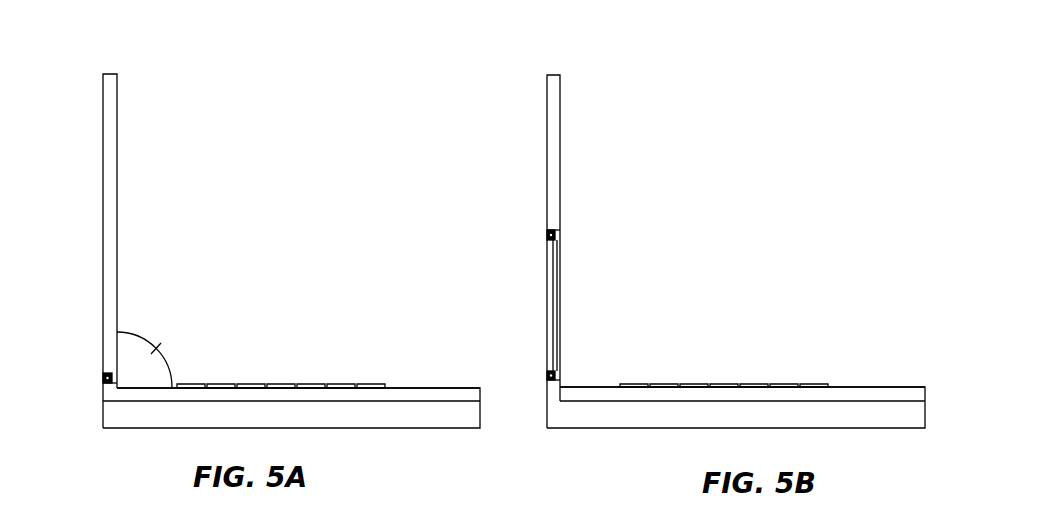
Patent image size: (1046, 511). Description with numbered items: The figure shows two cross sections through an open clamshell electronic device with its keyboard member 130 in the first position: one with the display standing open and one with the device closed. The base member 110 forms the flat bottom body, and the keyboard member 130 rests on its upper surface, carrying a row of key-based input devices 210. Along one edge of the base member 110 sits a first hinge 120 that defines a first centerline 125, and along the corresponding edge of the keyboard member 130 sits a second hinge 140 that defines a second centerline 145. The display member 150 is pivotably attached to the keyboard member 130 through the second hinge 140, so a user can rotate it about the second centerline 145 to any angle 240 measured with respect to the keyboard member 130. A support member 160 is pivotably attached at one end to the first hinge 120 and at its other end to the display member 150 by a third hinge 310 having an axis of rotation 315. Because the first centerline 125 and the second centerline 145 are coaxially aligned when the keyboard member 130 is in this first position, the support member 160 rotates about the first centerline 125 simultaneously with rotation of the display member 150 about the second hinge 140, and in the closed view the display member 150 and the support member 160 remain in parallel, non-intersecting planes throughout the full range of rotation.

In FIG. 5A, the base member 110 is at (356, 428).
In FIG. 5B, the base member 110 is at (790, 408).
In FIG. 5B, the first hinge 120 is at (547, 386).
In FIG. 5B, the first centerline 125 is at (555, 372).
In FIG. 5A, the keyboard member 130 is at (433, 387).
In FIG. 5B, the keyboard member 130 is at (872, 398).
In FIG. 5A, the second hinge 140 is at (103, 390).
In FIG. 5A, the second centerline 145 is at (108, 380).
In FIG. 5B, the display member 150 is at (560, 153).
In FIG. 5B, the support member 160 is at (547, 272).
In FIG. 5A, the key-based input device 210 is at (283, 384).
In FIG. 5B, the key-based input device 210 is at (723, 384).
In FIG. 5A, the angle 240 is at (142, 333).
In FIG. 5B, the third hinge 310 is at (555, 232).
In FIG. 5B, the axis of rotation 315 is at (555, 240).